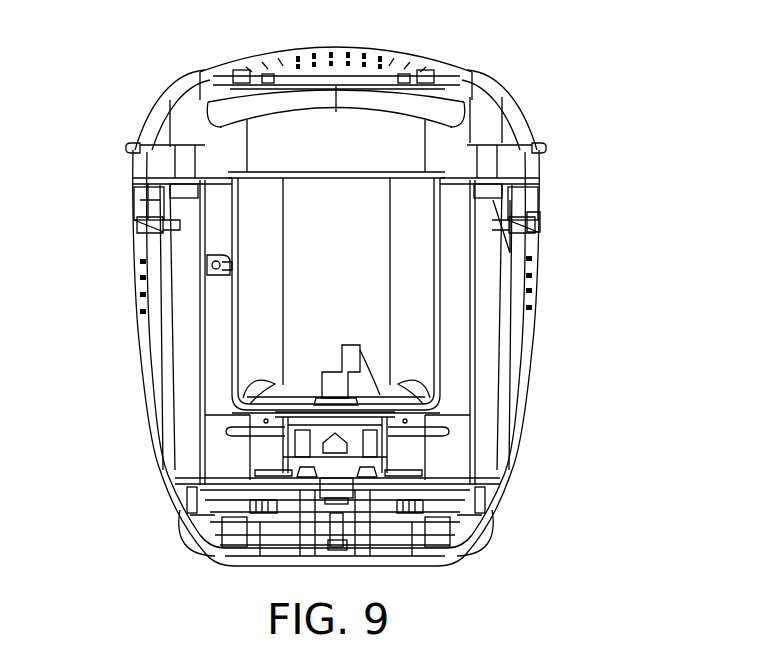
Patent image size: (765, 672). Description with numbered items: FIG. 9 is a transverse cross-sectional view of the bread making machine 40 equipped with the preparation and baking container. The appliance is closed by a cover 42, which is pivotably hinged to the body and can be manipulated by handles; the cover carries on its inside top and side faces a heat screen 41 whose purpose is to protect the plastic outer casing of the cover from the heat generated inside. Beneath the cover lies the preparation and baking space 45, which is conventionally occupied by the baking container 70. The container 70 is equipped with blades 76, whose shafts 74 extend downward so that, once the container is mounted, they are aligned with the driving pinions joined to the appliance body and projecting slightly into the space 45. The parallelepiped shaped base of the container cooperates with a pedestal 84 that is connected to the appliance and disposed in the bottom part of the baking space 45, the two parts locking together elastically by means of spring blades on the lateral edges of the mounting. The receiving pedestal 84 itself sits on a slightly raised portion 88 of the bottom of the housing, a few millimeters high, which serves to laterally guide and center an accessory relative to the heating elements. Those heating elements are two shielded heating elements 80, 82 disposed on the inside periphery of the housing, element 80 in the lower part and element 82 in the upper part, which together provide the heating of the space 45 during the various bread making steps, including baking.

The bread making machine 40 is at (568, 306).
The heat screen 41 is at (208, 120).
The cover 42 is at (496, 102).
The preparation and baking space 45 is at (452, 370).
The baking container 70 is at (423, 237).
The shafts of the blades 74 is at (327, 422).
The blades 76 is at (358, 353).
The shielded heating element 80 is at (300, 413).
The shielded heating element 82 is at (212, 264).
The pedestal 84 is at (400, 433).
The raised portion 88 is at (415, 484).